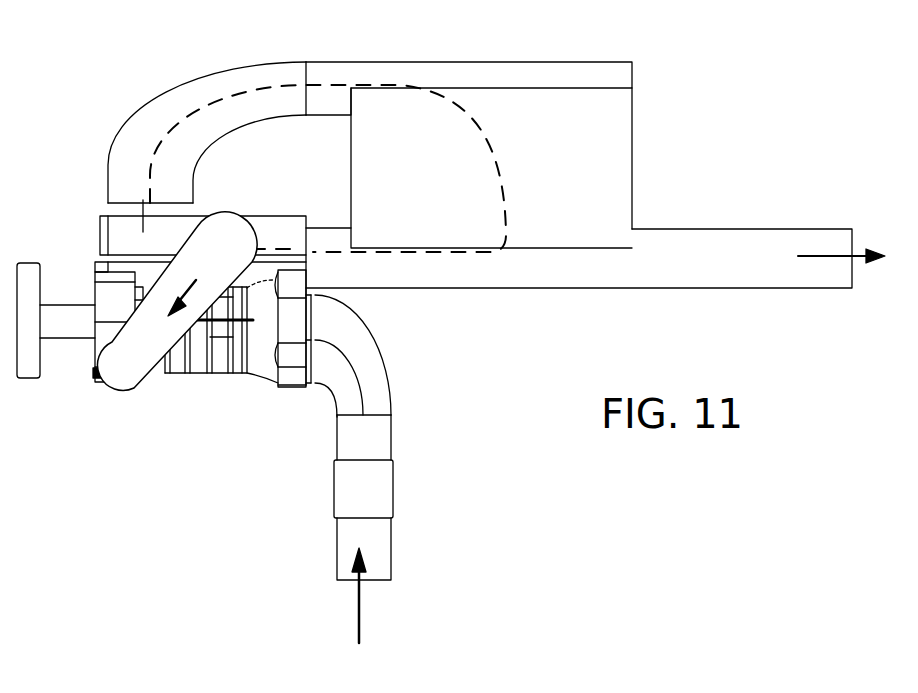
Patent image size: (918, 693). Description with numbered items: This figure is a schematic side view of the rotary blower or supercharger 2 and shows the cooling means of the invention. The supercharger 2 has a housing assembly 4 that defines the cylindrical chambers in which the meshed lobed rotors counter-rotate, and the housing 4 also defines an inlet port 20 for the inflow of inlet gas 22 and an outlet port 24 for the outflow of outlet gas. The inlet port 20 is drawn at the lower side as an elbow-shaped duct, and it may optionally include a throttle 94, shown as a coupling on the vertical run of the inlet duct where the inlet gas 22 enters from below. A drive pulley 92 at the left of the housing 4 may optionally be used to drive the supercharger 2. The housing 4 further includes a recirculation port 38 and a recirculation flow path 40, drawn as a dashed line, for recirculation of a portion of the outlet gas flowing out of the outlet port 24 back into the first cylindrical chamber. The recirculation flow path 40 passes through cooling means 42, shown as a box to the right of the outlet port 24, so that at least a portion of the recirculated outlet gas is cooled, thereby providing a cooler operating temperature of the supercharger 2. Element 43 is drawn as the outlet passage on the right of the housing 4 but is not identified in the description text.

The rotary blower or supercharger 2 is at (680, 42).
The housing assembly 4 is at (262, 370).
The inlet port 20 is at (376, 343).
The inlet gas 22 is at (339, 595).
The outlet port 24 is at (138, 113).
The recirculation port 38 is at (124, 362).
The recirculation flow path 40 is at (227, 88).
The cooling means 42 is at (516, 180).
The outlet pipe 43 is at (705, 229).
The drive pulley 92 is at (32, 378).
The throttle 94 is at (395, 485).